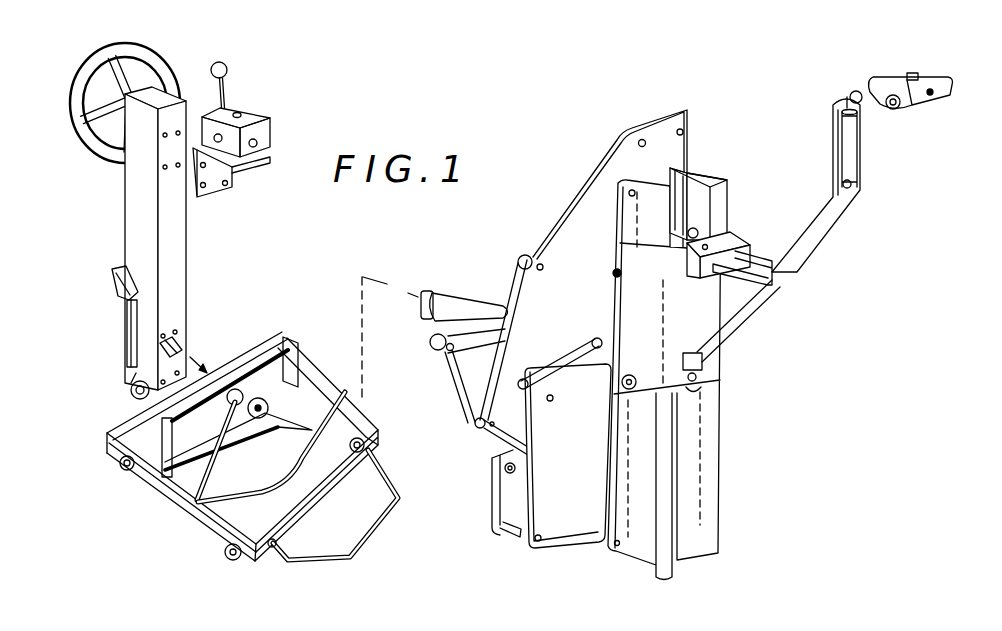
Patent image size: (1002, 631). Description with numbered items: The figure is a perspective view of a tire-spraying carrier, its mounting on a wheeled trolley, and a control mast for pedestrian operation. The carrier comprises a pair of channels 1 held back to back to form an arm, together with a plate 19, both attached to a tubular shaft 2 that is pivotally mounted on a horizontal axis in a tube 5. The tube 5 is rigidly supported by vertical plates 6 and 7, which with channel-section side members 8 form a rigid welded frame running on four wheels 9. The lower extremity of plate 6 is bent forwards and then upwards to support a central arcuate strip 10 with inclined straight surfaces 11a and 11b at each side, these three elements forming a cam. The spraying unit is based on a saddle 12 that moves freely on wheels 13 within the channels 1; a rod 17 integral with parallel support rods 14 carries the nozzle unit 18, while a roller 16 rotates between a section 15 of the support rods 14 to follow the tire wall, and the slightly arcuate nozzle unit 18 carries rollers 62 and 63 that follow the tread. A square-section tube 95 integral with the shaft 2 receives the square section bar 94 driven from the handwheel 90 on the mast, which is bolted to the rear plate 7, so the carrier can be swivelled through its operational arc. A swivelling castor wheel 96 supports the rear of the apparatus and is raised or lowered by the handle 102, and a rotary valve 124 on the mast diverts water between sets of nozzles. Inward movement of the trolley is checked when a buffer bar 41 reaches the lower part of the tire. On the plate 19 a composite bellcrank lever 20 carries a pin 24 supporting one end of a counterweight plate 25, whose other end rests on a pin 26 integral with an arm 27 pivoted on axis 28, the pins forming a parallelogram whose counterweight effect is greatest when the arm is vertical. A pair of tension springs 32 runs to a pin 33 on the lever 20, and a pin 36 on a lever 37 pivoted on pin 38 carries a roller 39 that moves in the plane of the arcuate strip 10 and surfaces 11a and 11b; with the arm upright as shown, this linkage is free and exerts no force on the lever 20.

The channels 1 is at (720, 190).
The tubular shaft 2 is at (458, 312).
The tube 5 is at (229, 402).
The vertical plate 6 is at (297, 383).
The vertical plate 7 is at (222, 380).
The side members 8 is at (200, 520).
The wheels 9 is at (358, 455).
The arcuate strip 10 is at (282, 487).
The straight surface 11a is at (190, 505).
The straight surface 11b is at (337, 397).
The saddle 12 is at (717, 358).
The wheels 13 is at (630, 390).
The support rods 14 is at (754, 260).
The section 15 is at (835, 138).
The roller 16 is at (852, 152).
The rod 17 is at (860, 187).
The nozzle unit 18 is at (920, 98).
The plate 19 is at (684, 127).
The lever 20 is at (503, 502).
The pin 24 is at (510, 538).
The counterweight plate 25 is at (562, 527).
The pin 26 is at (554, 398).
The arm 27 is at (567, 353).
The axis 28 is at (594, 340).
The tension springs 32 is at (488, 448).
The pin 33 is at (506, 472).
The pin 36 is at (446, 350).
The lever 37 is at (460, 386).
The pin 38 is at (475, 425).
The roller 39 is at (429, 341).
The buffer bar 41 is at (292, 470).
The roller 62 is at (888, 108).
The roller 63 is at (914, 77).
The handwheel 90 is at (165, 68).
The square section bar 94 is at (178, 346).
The square-section tube 95 is at (425, 293).
The castor wheel 96 is at (132, 389).
The handle 102 is at (112, 272).
The rotary valve 124 is at (250, 117).